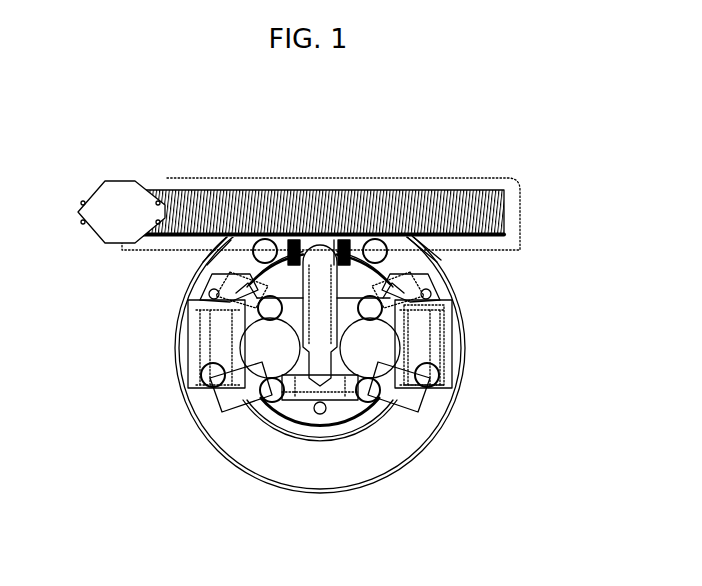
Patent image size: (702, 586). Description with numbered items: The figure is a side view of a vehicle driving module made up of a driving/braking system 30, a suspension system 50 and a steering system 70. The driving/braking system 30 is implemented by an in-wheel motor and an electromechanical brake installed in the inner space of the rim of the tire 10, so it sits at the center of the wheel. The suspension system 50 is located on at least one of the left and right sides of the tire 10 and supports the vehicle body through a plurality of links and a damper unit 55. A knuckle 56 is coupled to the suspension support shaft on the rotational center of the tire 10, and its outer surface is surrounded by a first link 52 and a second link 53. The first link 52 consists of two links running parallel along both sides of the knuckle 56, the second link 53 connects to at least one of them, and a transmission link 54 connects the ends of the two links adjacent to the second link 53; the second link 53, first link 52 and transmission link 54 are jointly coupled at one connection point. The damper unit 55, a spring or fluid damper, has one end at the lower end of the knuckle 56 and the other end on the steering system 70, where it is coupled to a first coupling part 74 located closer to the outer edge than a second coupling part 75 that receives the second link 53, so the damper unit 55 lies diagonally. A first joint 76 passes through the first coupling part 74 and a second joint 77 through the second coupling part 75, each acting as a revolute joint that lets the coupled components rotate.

The tire 10 is at (398, 445).
The driving/braking system 30 is at (312, 395).
The suspension system 50 is at (436, 353).
The first link 52 is at (206, 280).
The second link 53 is at (195, 318).
The transmission link 54 is at (205, 345).
The damper unit 55 is at (300, 420).
The knuckle 56 is at (340, 396).
The steering system 70 is at (490, 183).
The first coupling part 74 is at (300, 243).
The second coupling part 75 is at (378, 243).
The first joint 76 is at (352, 243).
The second joint 77 is at (406, 244).